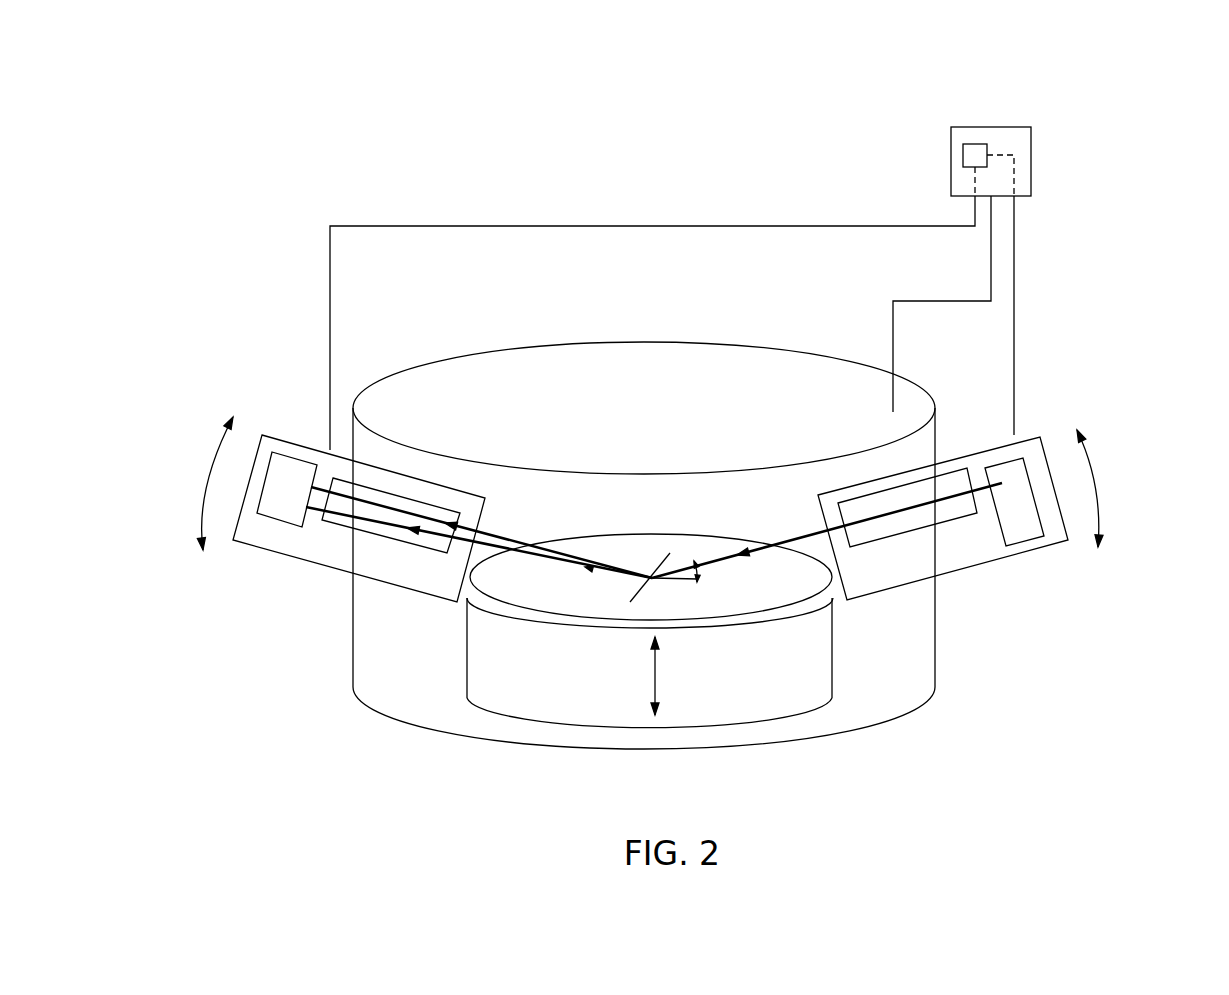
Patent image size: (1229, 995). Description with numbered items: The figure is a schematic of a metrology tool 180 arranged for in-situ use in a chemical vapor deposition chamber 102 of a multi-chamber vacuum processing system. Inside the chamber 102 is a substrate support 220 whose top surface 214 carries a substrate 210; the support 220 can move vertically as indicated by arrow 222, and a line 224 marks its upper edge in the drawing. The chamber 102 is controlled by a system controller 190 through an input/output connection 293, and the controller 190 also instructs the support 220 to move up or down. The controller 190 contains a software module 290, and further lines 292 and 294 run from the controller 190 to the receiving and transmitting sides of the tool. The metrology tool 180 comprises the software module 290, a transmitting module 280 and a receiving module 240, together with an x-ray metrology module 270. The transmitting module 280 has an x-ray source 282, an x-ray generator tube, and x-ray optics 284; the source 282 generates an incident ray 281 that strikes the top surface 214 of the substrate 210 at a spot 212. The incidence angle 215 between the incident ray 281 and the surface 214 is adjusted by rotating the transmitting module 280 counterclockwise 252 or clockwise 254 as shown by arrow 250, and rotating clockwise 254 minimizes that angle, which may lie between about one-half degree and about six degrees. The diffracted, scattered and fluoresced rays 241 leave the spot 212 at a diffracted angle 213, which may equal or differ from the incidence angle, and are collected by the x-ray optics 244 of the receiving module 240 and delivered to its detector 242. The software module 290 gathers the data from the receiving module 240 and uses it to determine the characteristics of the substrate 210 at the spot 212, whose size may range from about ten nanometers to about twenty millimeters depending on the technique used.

The chemical vapor deposition (CVD) chamber 102 is at (687, 342).
The metrology tool 180 is at (637, 465).
The system controller 190 is at (1031, 155).
The substrate 210 is at (662, 537).
The spot 212 is at (652, 580).
The diffracted angle 213 is at (578, 569).
The top surface 214 is at (745, 595).
The angle of incidence 215 is at (693, 575).
The substrate support 220 is at (802, 697).
The arrow 222 is at (655, 675).
The substrate support surface 224 is at (813, 603).
The receiving module 240 is at (312, 449).
The diffracted rays 241 is at (508, 543).
The detector 242 is at (275, 525).
The x-ray optics 244 is at (380, 542).
The arrow 250 is at (208, 470).
The counterclockwise 252 is at (1075, 425).
The clockwise 254 is at (1100, 535).
The x-ray metrology module 270 is at (1062, 558).
The transmitting module 280 is at (970, 452).
The incident ray 281 is at (762, 537).
The x-ray source 282 is at (1027, 558).
The x-ray optics 284 is at (912, 537).
The software module 290 is at (965, 144).
The signal line to detector 292 is at (458, 226).
The input/output connection 293 is at (893, 320).
The signal line to light source 294 is at (992, 265).